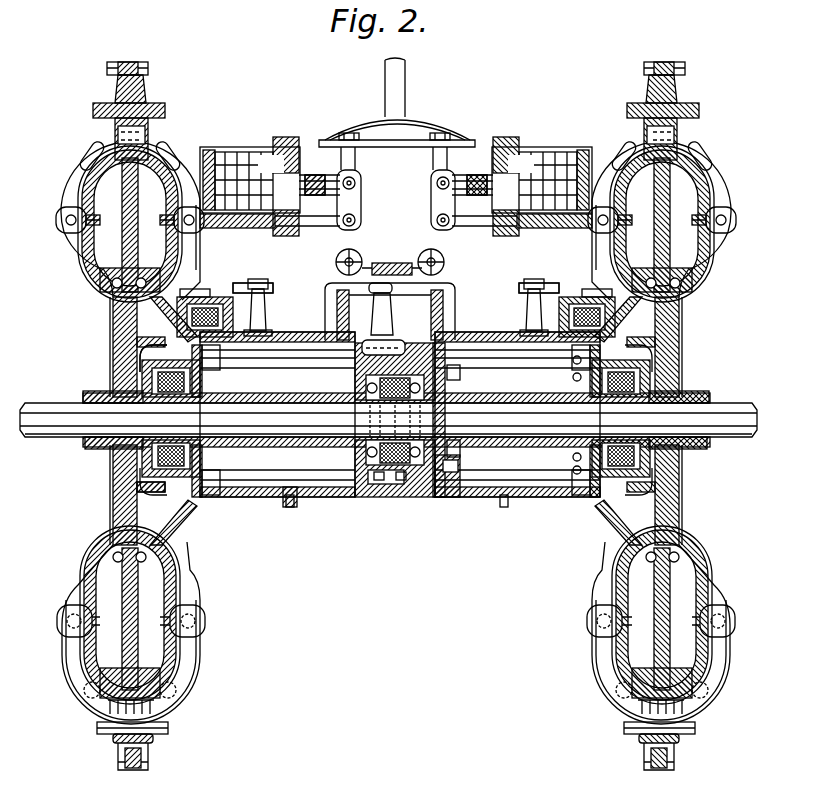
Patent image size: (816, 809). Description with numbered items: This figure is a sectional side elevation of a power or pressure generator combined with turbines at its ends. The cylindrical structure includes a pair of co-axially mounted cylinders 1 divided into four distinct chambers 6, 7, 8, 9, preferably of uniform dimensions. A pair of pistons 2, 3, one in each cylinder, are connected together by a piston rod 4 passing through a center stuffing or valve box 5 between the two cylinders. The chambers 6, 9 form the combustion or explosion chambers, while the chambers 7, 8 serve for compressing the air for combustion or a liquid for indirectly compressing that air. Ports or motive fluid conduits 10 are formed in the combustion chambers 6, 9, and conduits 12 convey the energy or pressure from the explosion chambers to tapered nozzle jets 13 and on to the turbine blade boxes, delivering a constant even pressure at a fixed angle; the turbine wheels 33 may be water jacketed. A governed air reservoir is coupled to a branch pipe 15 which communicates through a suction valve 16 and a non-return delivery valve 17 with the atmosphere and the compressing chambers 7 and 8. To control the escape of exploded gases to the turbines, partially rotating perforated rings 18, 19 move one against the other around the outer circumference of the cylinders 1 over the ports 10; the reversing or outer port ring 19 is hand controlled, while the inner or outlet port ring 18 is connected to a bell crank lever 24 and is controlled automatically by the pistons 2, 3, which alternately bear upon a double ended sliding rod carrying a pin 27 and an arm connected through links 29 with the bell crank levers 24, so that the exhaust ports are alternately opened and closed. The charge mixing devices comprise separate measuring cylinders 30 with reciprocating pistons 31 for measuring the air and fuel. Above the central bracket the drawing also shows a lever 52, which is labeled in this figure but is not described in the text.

The cylinder 1 is at (300, 505).
The piston 2 is at (285, 502).
The piston 3 is at (455, 485).
The piston rod 4 is at (313, 440).
The center stuffing or valve box 5 is at (403, 458).
The combustion or explosion chamber 6 is at (135, 477).
The compressing chamber 7 is at (277, 414).
The compressing chamber 8 is at (420, 498).
The combustion or explosion chamber 9 is at (517, 414).
The motive fluid conduit port 10 is at (180, 347).
The conduit 12 is at (181, 163).
The tapered nozzle jet 13 is at (80, 215).
The branch pipe 15 is at (392, 263).
The suction valve 16 is at (325, 306).
The non-return delivery valve 17 is at (340, 259).
The inner or outlet port ring 18 is at (163, 348).
The reversing or outer port ring 19 is at (206, 297).
The bell crank lever 24 is at (272, 283).
The pin 27 is at (390, 318).
The link 29 is at (272, 290).
The measuring cylinder 30 is at (245, 148).
The reciprocating piston 31 is at (561, 231).
The turbine wheel 33 is at (138, 178).
The lever 52 is at (389, 148).